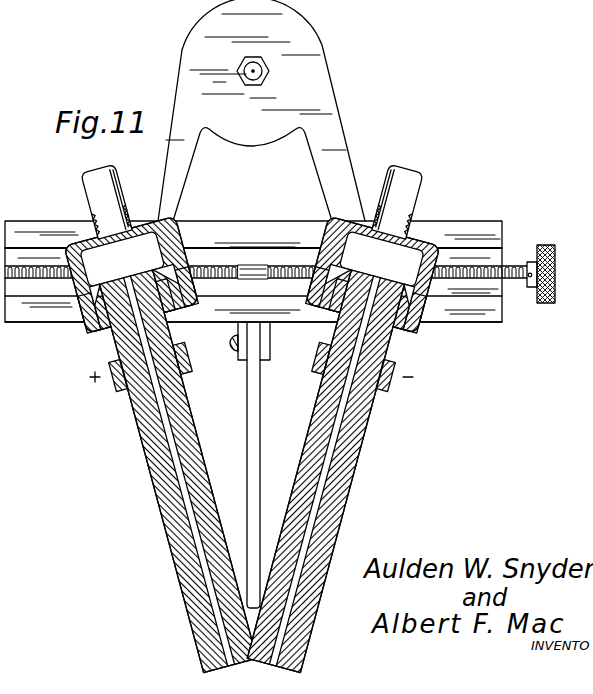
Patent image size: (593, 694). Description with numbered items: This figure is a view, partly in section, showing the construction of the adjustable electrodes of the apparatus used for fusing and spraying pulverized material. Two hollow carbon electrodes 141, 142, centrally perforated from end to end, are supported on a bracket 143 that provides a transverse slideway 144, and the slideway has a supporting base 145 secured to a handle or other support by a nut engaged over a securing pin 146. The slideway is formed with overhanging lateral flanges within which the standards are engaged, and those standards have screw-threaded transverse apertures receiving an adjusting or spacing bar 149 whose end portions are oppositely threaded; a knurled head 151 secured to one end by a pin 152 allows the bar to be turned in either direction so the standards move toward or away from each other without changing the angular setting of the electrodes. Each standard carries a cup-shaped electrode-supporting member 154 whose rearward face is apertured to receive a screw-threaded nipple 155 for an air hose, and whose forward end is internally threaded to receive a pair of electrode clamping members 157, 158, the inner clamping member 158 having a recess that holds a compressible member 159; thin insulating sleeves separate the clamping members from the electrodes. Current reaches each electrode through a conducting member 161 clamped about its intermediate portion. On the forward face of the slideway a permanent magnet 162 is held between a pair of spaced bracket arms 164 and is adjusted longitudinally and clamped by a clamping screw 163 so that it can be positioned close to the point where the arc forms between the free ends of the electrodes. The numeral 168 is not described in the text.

The hollow electrode 141 is at (170, 552).
The hollow electrode 142 is at (332, 547).
The bracket 143 is at (458, 222).
The transverse slideway 144 is at (495, 292).
The supporting base 145 is at (334, 98).
The securing pin 146 is at (270, 71).
The adjusting or spacing bar 149 is at (516, 259).
The knurled head 151 is at (555, 267).
The pin 152 is at (555, 280).
The cup-shaped electrode-supporting member 154 is at (78, 326).
The screw-threaded nipple 155 is at (87, 199).
The electrode clamping member 157 is at (104, 334).
The electrode clamping member 158 is at (161, 268).
The compressible member 159 is at (177, 311).
The conducting member 161 is at (114, 384).
The permanent magnet 162 is at (261, 422).
The clamping screw 163 is at (232, 351).
The bracket arms 164 is at (266, 352).
The reference 168 is at (15, 8).